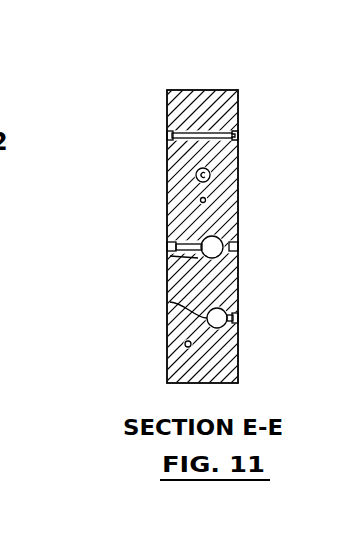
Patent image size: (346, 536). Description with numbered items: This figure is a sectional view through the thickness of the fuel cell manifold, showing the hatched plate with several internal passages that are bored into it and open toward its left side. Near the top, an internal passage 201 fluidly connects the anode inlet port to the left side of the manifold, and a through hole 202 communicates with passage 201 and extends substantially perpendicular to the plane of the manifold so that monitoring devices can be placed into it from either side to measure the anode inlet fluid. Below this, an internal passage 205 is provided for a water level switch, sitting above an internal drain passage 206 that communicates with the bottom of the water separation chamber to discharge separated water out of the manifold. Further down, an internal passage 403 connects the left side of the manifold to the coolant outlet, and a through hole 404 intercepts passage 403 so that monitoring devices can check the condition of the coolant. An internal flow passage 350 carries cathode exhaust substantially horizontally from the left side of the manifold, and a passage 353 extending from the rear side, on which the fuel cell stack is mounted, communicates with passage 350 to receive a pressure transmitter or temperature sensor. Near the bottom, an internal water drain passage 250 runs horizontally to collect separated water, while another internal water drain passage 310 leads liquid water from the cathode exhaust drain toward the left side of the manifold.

The internal passage 201 is at (223, 133).
The through hole 202 is at (238, 136).
The internal passage 205 is at (238, 178).
The internal drain passage 206 is at (200, 200).
The internal passage 403 is at (238, 248).
The through hole 404 is at (170, 256).
The internal flow passage 350 is at (170, 302).
The passage 353 is at (238, 318).
The internal water drain passage 250 is at (185, 344).
The internal water drain passage 310 is at (223, 357).